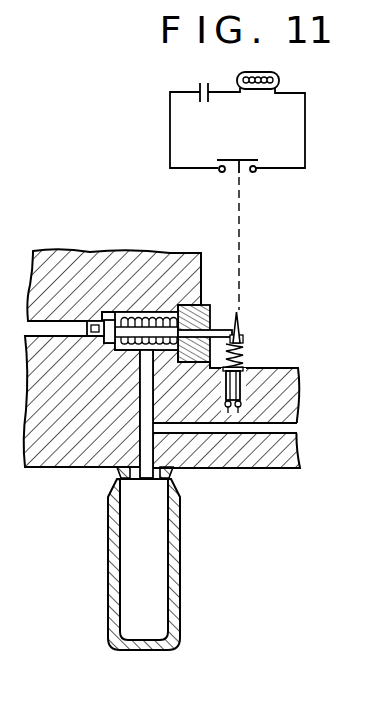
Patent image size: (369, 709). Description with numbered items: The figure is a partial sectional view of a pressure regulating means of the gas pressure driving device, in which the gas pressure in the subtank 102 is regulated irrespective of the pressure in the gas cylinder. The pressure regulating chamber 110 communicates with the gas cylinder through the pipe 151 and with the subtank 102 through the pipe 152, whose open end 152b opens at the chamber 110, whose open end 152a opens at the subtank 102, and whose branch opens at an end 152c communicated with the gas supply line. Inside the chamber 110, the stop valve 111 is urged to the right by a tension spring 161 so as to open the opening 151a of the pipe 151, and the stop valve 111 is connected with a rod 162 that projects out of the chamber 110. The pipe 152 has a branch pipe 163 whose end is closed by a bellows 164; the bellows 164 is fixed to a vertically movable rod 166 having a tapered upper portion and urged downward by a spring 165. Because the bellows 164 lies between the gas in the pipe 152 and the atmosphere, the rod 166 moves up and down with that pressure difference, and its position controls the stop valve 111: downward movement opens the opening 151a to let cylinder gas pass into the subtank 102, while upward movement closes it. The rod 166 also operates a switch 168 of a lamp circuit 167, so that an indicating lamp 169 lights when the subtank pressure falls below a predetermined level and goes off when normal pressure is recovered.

The subtank 102 is at (177, 563).
The pressure regulating chamber 110 is at (145, 307).
The pressure regulating stop valve 111 is at (96, 348).
The pipe 151 is at (45, 321).
The opening 151a is at (96, 321).
The pipe 152 is at (145, 438).
The open end 152a is at (143, 483).
The open end 152b is at (137, 354).
The open end 152c is at (287, 430).
The tension spring 161 is at (185, 254).
The rod 162 is at (221, 332).
The branch pipe 163 is at (234, 414).
The bellows 164 is at (262, 399).
The spring 165 is at (243, 356).
The rod 166 is at (238, 332).
The lamp circuit 167 is at (160, 123).
The switch 168 is at (247, 157).
The indicating lamp 169 is at (296, 70).